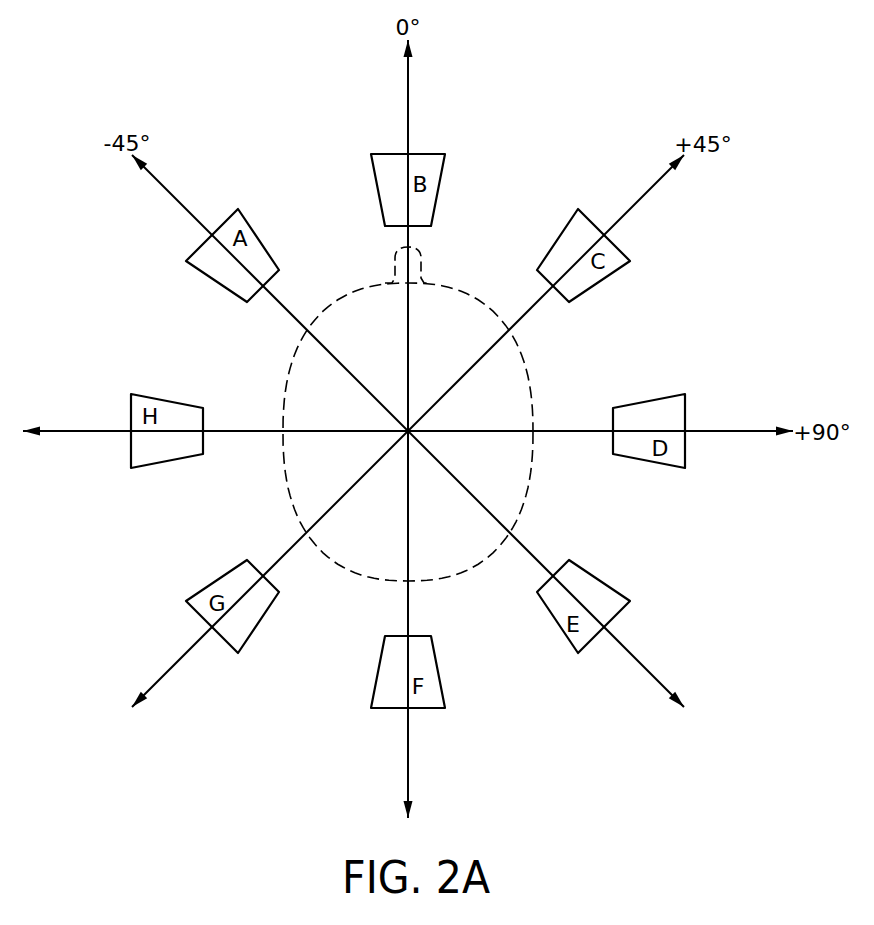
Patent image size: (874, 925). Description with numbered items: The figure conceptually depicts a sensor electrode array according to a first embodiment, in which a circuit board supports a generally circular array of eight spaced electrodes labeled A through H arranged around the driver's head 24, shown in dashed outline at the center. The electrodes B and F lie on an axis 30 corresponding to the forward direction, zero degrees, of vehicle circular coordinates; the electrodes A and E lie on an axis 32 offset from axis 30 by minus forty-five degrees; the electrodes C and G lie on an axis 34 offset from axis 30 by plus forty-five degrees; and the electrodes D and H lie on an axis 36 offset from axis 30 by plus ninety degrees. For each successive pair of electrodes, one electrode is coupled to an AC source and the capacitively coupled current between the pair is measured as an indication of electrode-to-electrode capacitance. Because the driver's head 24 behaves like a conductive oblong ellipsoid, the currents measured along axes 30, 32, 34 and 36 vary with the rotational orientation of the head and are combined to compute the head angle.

The driver's head 24 is at (357, 572).
The axis 30 is at (410, 101).
The axis 32 is at (183, 193).
The axis 34 is at (637, 198).
The axis 36 is at (730, 434).